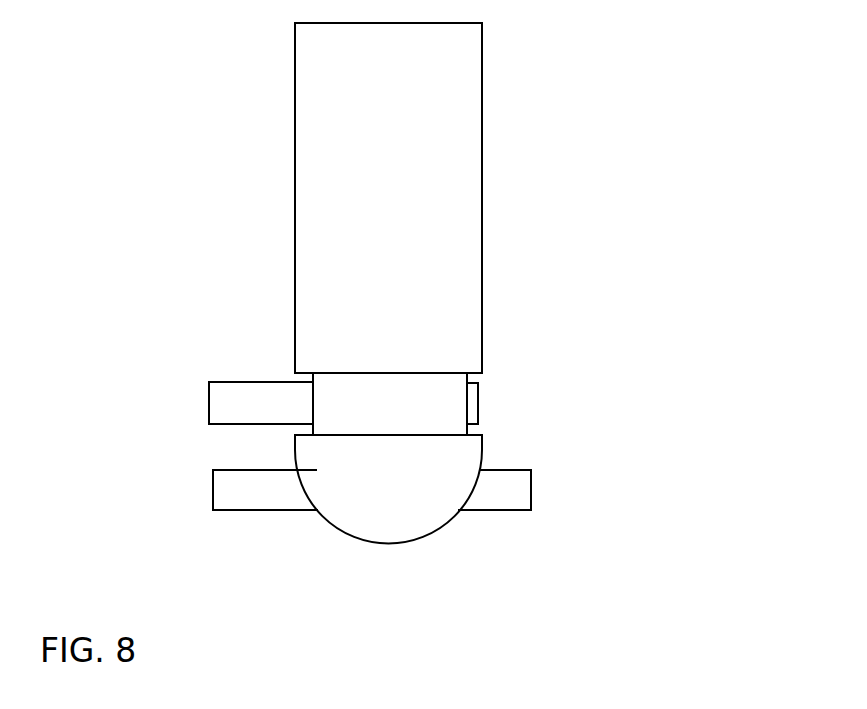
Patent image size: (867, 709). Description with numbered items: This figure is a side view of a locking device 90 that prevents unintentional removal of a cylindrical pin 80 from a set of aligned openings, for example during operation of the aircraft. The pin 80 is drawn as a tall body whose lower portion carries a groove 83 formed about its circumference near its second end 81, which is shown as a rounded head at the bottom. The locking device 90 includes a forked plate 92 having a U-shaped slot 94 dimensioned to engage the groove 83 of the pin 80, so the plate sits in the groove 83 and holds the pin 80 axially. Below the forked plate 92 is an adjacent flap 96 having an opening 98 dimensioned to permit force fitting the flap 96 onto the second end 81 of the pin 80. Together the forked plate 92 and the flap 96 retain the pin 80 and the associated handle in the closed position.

The locking device 90 is at (158, 368).
The cylindrical pin 80 is at (335, 188).
The groove 83 is at (449, 398).
The forked plate 92 is at (231, 399).
The U-shaped slot 94 is at (464, 425).
The second end 81 is at (406, 497).
The flap 96 is at (255, 493).
The opening 98 is at (318, 512).